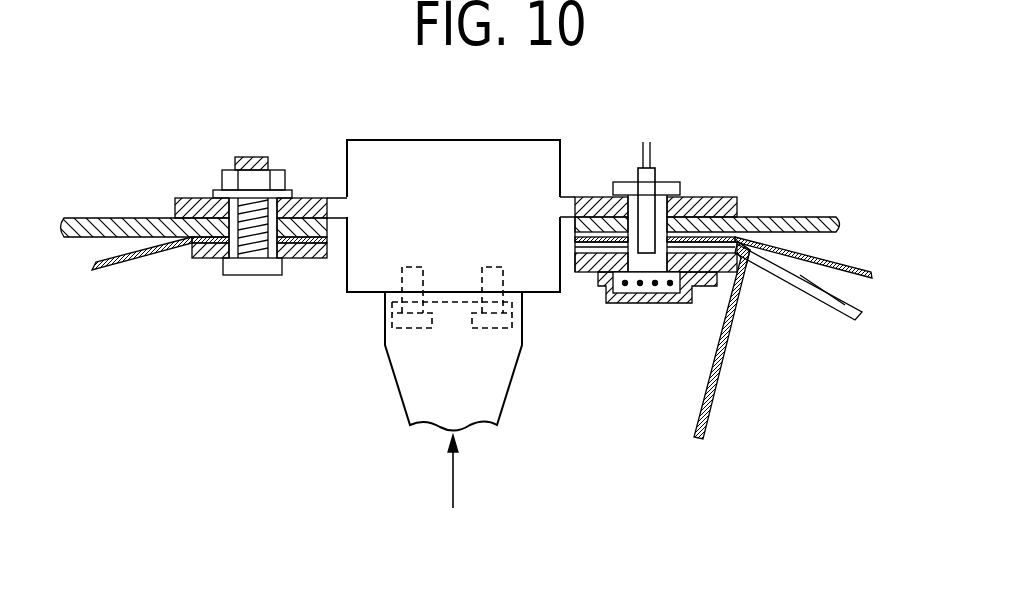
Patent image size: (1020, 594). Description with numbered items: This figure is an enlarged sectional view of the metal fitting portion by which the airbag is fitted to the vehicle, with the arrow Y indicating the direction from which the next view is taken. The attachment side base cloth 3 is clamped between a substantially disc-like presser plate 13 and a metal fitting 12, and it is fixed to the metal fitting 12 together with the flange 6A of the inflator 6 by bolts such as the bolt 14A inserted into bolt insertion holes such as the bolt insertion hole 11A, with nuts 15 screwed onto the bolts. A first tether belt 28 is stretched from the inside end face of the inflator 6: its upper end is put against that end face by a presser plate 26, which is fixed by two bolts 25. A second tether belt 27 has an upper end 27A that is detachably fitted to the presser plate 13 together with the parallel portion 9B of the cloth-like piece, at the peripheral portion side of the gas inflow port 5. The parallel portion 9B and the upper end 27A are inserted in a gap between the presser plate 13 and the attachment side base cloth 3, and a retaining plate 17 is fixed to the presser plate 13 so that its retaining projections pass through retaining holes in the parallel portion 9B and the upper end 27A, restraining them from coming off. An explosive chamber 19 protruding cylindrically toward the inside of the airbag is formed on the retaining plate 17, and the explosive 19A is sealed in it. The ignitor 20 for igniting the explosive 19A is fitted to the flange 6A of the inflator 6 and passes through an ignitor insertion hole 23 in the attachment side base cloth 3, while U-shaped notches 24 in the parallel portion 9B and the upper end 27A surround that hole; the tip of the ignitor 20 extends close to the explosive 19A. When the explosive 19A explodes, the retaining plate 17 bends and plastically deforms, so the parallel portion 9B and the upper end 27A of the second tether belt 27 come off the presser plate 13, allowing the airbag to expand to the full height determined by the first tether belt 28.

The attachment side base cloth 3 is at (118, 265).
The gas inflow port 5 is at (333, 240).
The inflator 6 is at (383, 153).
The flange of the inflator 6A is at (197, 208).
The parallel portion 9B is at (817, 288).
The bolt insertion hole 11A is at (233, 275).
The metal fitting 12 is at (817, 227).
The presser plate 13 is at (303, 260).
The bolt 14A is at (263, 275).
The nut 15 is at (277, 180).
The retaining plate 17 is at (672, 303).
The explosive chamber 19 is at (627, 297).
The explosive 19A is at (660, 290).
The ignitor 20 is at (648, 170).
The ignitor insertion hole 23 is at (632, 240).
The U-shaped notch 24 is at (583, 268).
The bolt 25 is at (413, 320).
The presser plate 26 is at (457, 307).
The second tether belt 27 is at (712, 412).
The upper end of the second tether belt 27A is at (742, 257).
The first tether belt 28 is at (502, 385).
The arrow Y is at (455, 489).